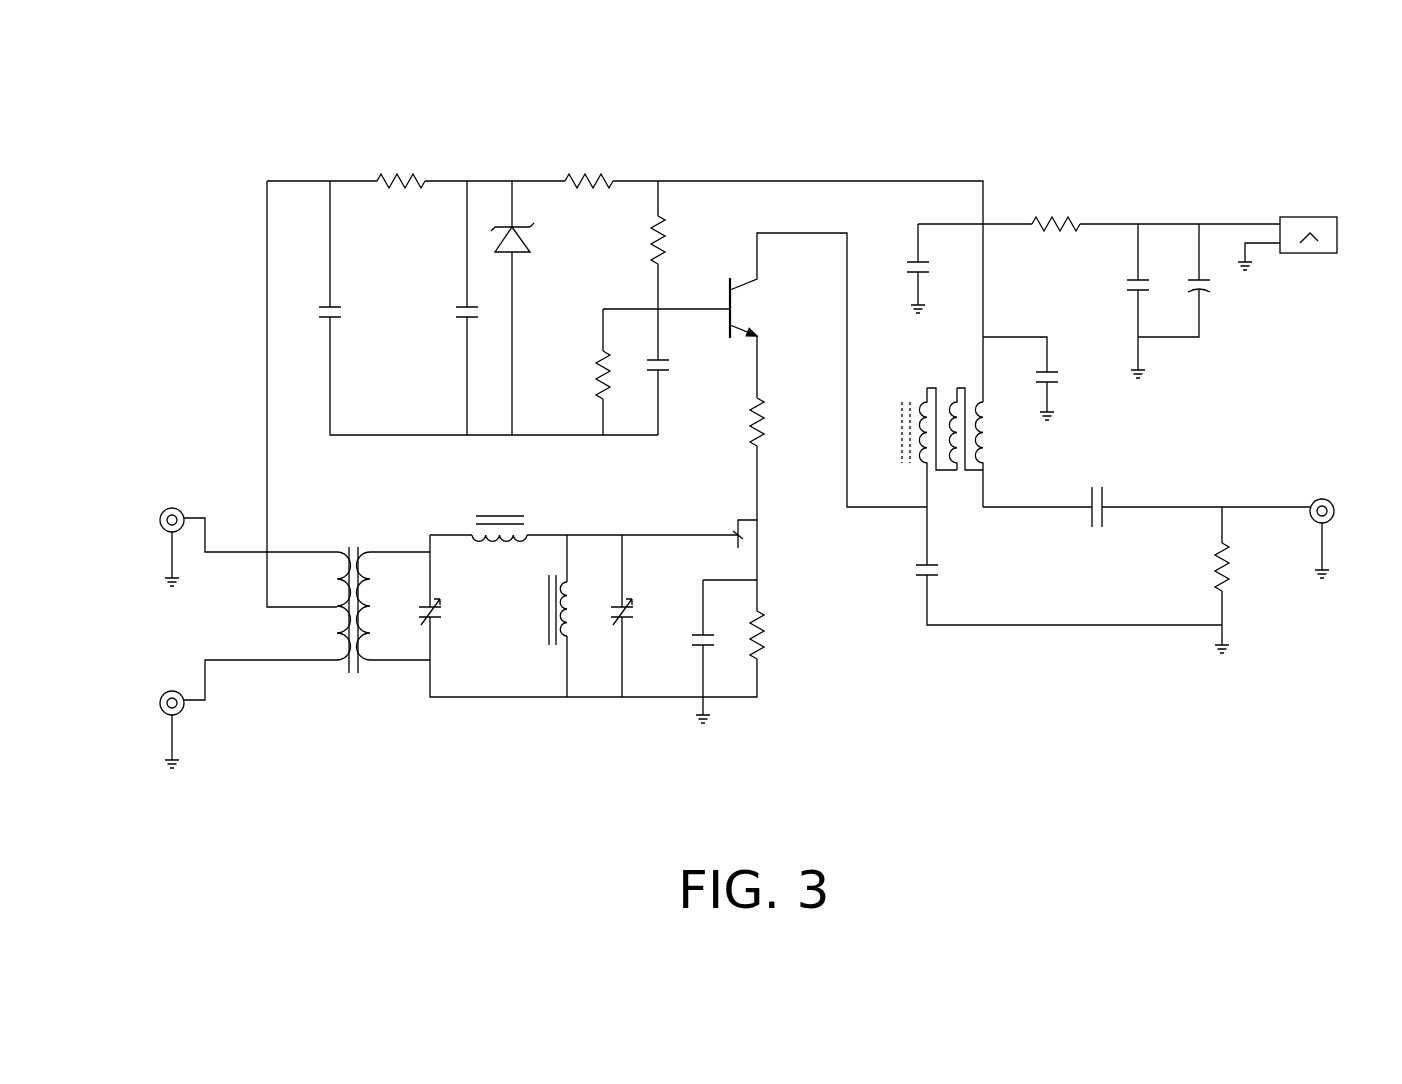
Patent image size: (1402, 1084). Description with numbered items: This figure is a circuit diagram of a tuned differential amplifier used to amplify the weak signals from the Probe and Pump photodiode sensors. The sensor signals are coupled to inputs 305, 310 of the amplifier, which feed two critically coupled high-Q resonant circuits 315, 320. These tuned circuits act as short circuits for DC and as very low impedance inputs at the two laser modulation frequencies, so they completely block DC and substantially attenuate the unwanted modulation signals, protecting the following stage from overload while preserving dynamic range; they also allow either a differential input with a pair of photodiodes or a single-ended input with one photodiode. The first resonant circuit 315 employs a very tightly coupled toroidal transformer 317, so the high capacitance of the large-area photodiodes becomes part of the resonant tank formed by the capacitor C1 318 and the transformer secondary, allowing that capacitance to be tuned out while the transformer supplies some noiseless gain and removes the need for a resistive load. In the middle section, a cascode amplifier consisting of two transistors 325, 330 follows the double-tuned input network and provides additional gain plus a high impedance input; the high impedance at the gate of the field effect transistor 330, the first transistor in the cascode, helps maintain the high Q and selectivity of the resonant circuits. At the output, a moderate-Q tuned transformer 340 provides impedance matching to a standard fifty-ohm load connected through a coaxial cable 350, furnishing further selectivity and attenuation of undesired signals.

The input 305 is at (172, 497).
The input 310 is at (155, 708).
The first high-Q resonant circuit 315 is at (397, 675).
The toroidal transformer 317 is at (353, 548).
The capacitor C1 318 is at (438, 617).
The second high-Q resonant circuit 320 is at (638, 670).
The transistor 325 is at (742, 287).
The field effect transistor 330 is at (742, 545).
The tuned transformer 340 is at (987, 438).
The coaxial cable 350 is at (1330, 498).